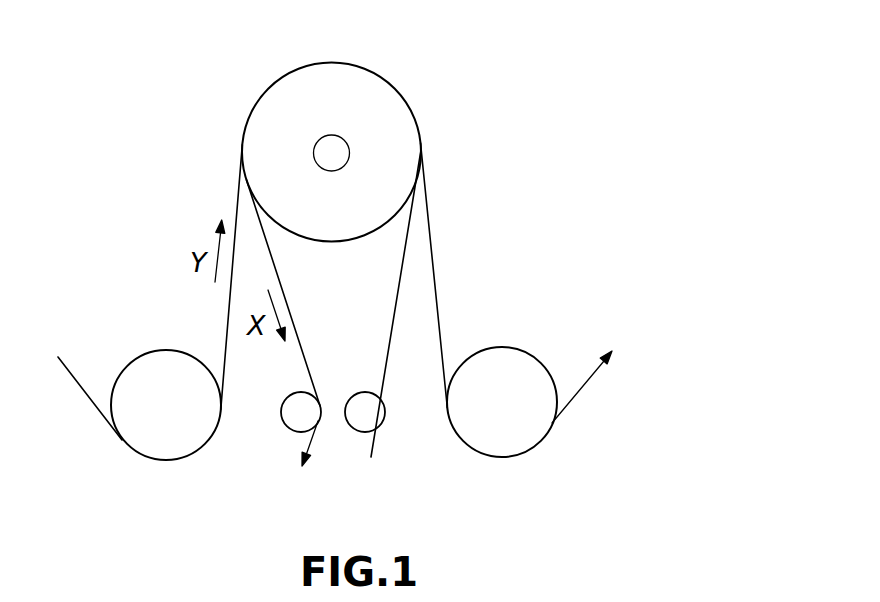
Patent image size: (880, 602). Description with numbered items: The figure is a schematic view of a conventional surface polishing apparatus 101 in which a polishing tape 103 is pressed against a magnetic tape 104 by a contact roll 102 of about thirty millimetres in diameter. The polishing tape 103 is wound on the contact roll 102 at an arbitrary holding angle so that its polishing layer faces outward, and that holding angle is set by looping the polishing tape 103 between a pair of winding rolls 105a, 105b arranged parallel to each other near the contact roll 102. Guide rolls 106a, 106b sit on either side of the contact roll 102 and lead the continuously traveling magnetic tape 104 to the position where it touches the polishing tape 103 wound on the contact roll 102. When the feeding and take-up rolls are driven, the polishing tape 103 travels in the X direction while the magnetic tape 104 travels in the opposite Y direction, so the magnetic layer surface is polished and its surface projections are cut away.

The polishing apparatus 101 is at (437, 96).
The contact roll 102 is at (421, 147).
The polishing tape 103 is at (390, 350).
The magnetic tape 104 is at (440, 300).
The winding roll 105a is at (386, 423).
The winding roll 105b is at (291, 422).
The guide roll 106a is at (167, 458).
The guide roll 106b is at (530, 358).